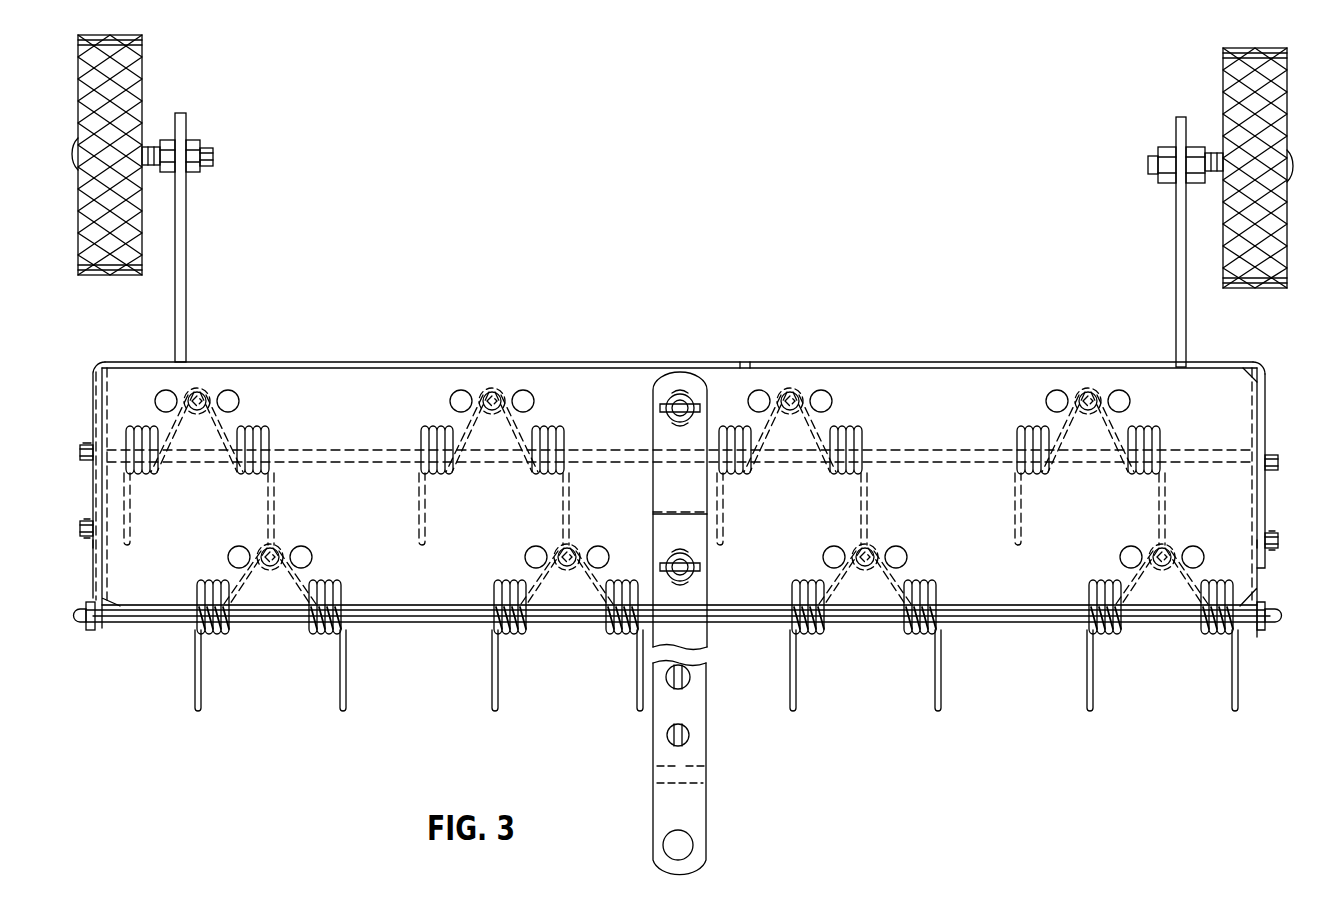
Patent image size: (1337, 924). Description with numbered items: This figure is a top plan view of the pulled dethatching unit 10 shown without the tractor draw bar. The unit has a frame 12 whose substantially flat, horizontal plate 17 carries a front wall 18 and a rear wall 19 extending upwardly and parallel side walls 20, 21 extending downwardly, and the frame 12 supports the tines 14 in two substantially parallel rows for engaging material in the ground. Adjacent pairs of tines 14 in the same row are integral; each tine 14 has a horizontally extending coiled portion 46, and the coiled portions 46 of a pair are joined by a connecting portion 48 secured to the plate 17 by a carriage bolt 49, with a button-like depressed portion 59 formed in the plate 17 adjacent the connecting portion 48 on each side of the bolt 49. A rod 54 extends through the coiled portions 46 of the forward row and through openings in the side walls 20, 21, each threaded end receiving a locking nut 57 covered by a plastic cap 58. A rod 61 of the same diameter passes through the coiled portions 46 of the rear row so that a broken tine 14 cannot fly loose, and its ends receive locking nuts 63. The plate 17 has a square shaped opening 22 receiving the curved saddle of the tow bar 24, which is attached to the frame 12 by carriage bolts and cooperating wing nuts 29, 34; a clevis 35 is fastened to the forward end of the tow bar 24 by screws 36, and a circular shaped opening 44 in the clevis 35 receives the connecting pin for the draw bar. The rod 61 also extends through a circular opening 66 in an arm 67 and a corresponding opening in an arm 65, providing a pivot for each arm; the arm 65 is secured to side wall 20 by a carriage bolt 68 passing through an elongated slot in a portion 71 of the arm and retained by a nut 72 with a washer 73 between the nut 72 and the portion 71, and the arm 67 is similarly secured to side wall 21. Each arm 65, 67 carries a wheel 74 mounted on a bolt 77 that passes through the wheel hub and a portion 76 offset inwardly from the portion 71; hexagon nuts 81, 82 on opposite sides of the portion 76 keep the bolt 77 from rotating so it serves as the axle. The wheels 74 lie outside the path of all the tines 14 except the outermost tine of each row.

The pulled dethatching unit 10 is at (584, 640).
The frame 12 is at (445, 608).
The tines 14 is at (350, 690).
The plate 17 is at (490, 538).
The front wall 18 is at (761, 623).
The rear wall 19 is at (796, 363).
The side wall 20 is at (1247, 633).
The side wall 21 is at (97, 580).
The square shaped opening 22 is at (666, 513).
The tow bar 24 is at (708, 717).
The wing nut 29 is at (695, 410).
The wing nut 34 is at (695, 572).
The clevis 35 is at (707, 812).
The screws 36 is at (690, 677).
The circular shaped opening 44 is at (690, 852).
The coiled portion 46 is at (330, 584).
The connecting portion 48 is at (293, 588).
The carriage bolt 49 is at (490, 387).
The rod 54 is at (176, 625).
The locking nut 57 is at (93, 631).
The plastic cap 58 is at (86, 624).
The depressed portion 59 is at (530, 390).
The rod 61 is at (80, 454).
The locking nut 63 is at (86, 446).
The arm 65 is at (1268, 420).
The circular shaped opening 66 is at (92, 478).
The arm 67 is at (93, 497).
The carriage bolt 68 is at (82, 533).
The portion 71 is at (1268, 500).
The nut 72 is at (82, 513).
The washer 73 is at (93, 548).
The wheel 74 is at (108, 276).
The portion 76 is at (1187, 325).
The bolt 77 is at (1293, 168).
The hexagon nut 81 is at (1204, 183).
The hexagon nut 82 is at (1162, 183).